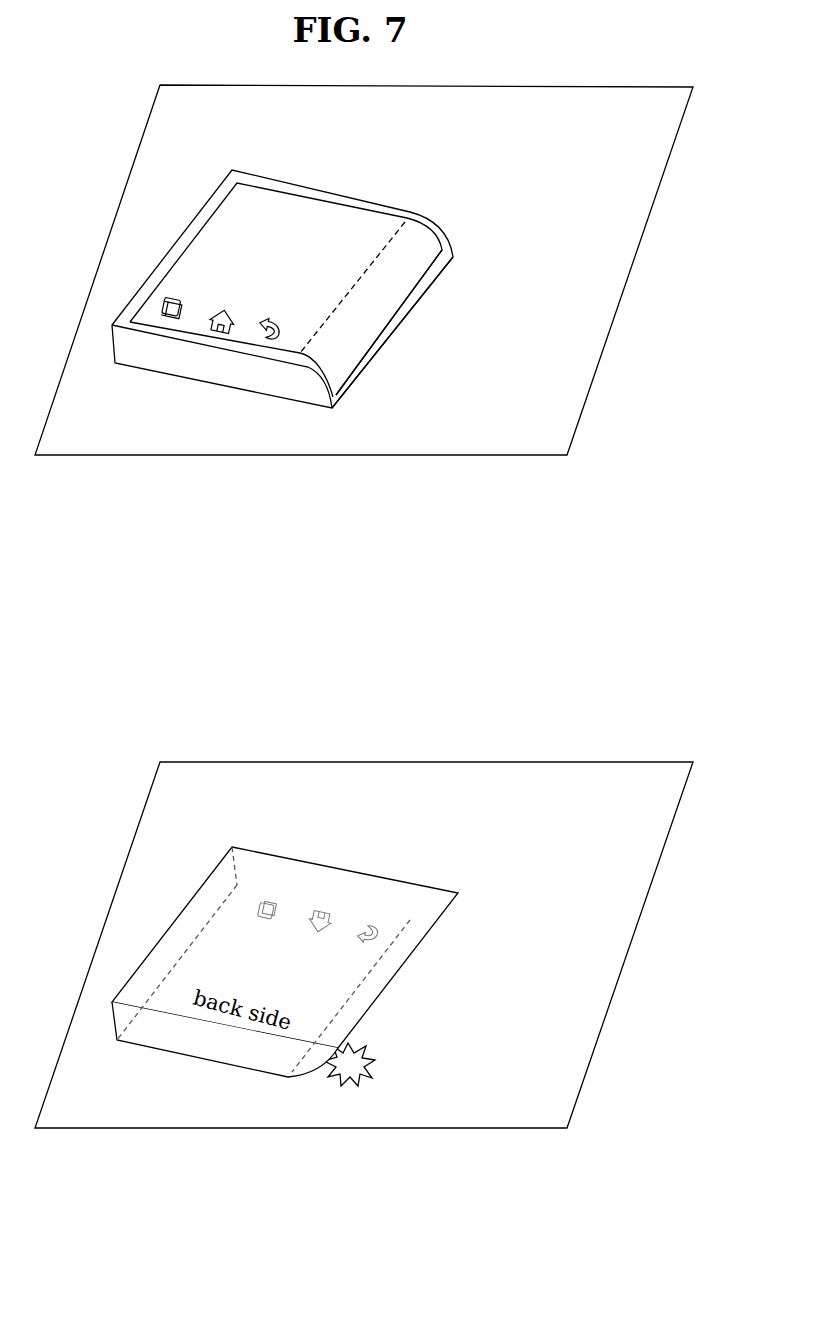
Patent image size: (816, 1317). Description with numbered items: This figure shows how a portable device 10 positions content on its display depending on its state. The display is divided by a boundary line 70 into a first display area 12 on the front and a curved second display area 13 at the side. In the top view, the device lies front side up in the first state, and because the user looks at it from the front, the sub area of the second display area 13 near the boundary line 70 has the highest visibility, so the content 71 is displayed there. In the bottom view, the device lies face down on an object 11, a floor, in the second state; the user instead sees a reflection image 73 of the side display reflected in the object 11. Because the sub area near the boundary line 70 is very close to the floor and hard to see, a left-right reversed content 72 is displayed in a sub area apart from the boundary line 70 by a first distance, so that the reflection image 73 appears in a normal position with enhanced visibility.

The portable device 10 is at (278, 183).
The object 11 is at (580, 333).
The first display area 12 is at (368, 220).
The second display area 13 is at (422, 255).
The boundary line 70 is at (390, 240).
The content 71 is at (346, 336).
The left-right reversed content 72 is at (403, 948).
The reflection image 73 is at (443, 963).